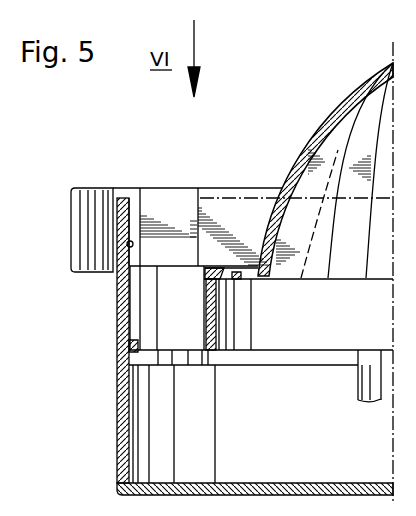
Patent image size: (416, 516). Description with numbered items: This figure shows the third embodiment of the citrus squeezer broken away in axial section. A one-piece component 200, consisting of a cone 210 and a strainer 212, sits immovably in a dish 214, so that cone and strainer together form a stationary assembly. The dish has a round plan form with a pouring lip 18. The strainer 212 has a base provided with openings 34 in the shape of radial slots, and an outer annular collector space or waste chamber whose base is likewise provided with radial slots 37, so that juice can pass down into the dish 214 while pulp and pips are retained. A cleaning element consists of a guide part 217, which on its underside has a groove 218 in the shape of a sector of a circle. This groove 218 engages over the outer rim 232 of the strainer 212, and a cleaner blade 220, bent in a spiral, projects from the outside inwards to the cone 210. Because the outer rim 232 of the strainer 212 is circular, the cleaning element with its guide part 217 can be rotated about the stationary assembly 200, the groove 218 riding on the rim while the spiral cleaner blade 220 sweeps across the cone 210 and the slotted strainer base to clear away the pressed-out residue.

The pouring lip 18 is at (391, 405).
The openings 34 is at (252, 275).
The radial slots 37 is at (184, 342).
The one-piece component 200 is at (339, 341).
The cone 210 is at (341, 110).
The strainer 212 is at (220, 308).
The dish 214 is at (252, 483).
The guide part 217 is at (101, 188).
The groove 218 is at (133, 244).
The cleaner blade 220 is at (249, 206).
The outer rim 232 is at (117, 304).